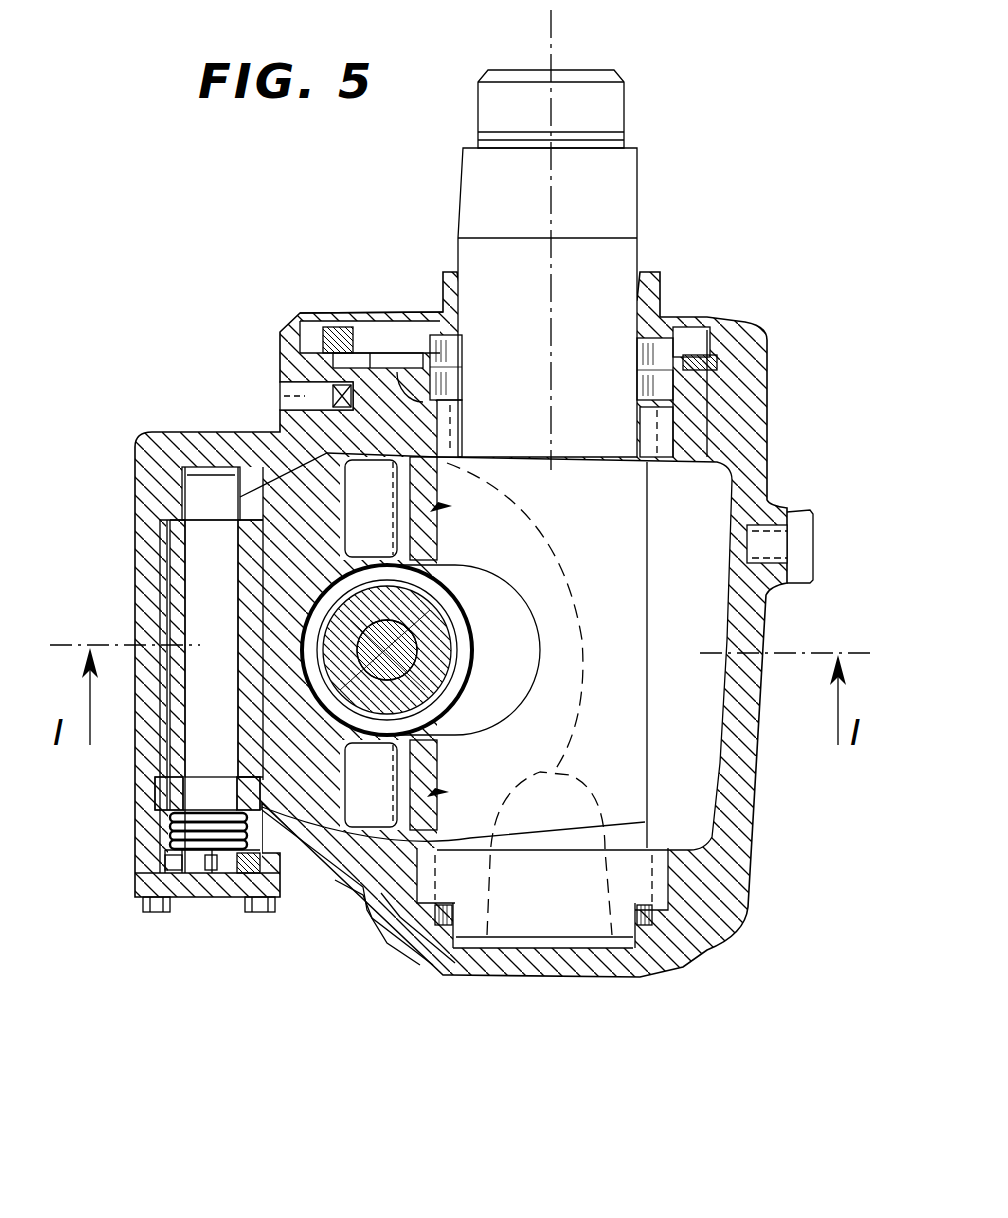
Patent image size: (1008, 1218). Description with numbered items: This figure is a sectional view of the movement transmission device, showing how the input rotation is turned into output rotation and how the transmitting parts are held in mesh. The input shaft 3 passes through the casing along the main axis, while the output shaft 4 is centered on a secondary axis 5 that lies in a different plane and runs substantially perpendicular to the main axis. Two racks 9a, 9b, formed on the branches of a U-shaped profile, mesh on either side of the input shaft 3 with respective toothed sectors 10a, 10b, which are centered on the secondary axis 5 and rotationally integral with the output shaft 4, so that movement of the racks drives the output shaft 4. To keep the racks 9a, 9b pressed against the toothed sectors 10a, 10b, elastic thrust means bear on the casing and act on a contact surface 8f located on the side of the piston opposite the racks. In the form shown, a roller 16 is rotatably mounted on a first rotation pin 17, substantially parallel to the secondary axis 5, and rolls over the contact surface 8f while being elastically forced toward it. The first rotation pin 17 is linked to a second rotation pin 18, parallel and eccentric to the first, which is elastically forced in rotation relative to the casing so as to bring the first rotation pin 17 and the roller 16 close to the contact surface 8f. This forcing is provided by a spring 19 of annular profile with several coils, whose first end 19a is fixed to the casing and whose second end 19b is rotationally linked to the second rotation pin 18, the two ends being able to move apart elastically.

The input shaft 3 is at (400, 650).
The output shaft 4 is at (600, 192).
The secondary axis 5 is at (548, 33).
The contact surface 8f is at (307, 813).
The rack 9a is at (398, 482).
The rack 9b is at (393, 943).
The toothed sector 10a is at (437, 503).
The toothed sector 10b is at (262, 807).
The roller 16 is at (177, 573).
The first rotation pin 17 is at (207, 545).
The second rotation pin 18 is at (213, 503).
The spring 19 is at (203, 832).
The first end of spring 19a is at (140, 875).
The second end of spring 19b is at (210, 820).